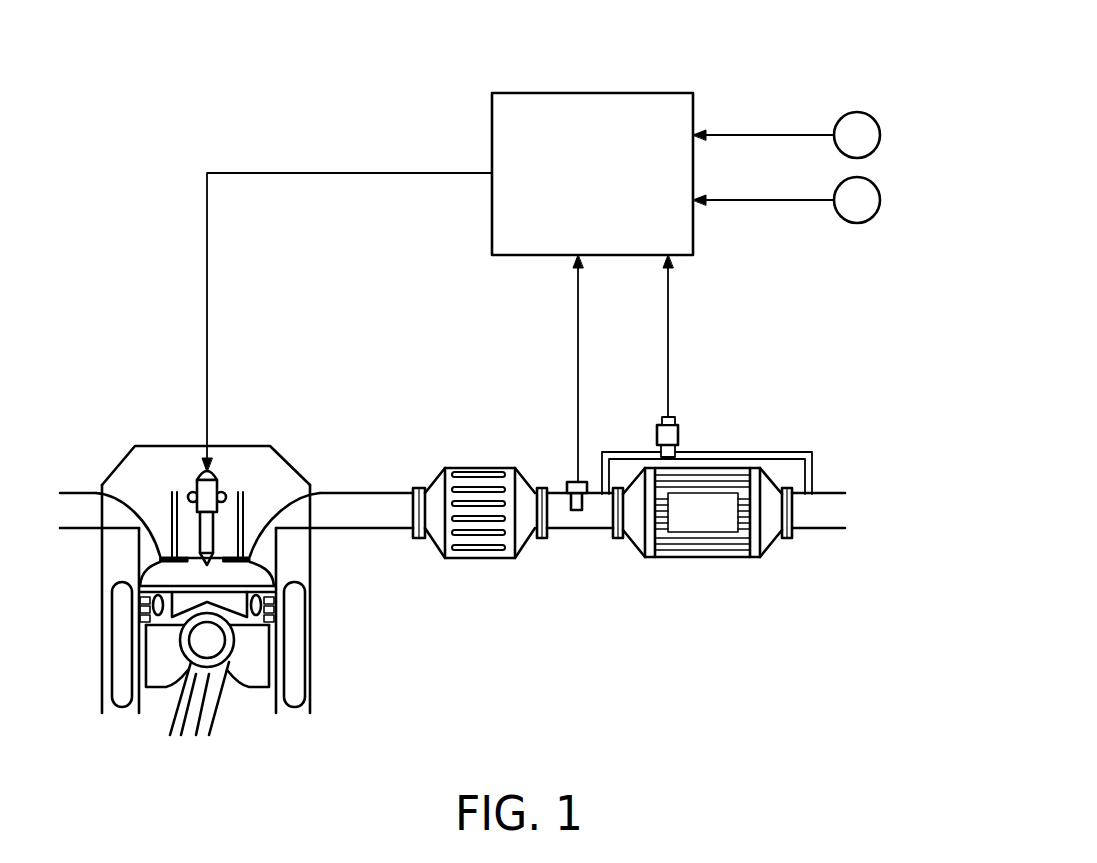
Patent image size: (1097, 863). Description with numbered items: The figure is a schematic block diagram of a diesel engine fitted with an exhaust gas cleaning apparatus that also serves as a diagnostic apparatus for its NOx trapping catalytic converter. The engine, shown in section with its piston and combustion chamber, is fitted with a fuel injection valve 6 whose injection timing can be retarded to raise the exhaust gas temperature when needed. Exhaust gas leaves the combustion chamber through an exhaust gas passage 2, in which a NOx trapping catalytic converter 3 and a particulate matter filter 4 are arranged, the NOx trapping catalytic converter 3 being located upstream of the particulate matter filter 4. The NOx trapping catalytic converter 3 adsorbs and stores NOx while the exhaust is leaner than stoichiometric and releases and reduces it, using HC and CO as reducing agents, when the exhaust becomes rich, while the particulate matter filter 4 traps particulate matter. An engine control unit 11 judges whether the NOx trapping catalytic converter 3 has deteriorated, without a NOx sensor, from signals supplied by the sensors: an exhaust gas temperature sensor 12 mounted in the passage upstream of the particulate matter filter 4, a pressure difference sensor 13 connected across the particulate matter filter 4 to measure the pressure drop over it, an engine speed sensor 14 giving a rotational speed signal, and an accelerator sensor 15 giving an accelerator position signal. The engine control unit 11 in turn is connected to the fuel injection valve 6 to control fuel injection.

The exhaust gas passage 2 is at (373, 518).
The NOx trapping catalytic converter 3 is at (487, 550).
The particulate matter filter 4 is at (707, 548).
The fuel injection valve 6 is at (192, 492).
The engine control unit 11 is at (655, 107).
The exhaust gas temperature sensor 12 is at (563, 480).
The pressure difference sensor 13 is at (678, 433).
The engine speed sensor 14 is at (880, 130).
The accelerator sensor 15 is at (880, 196).